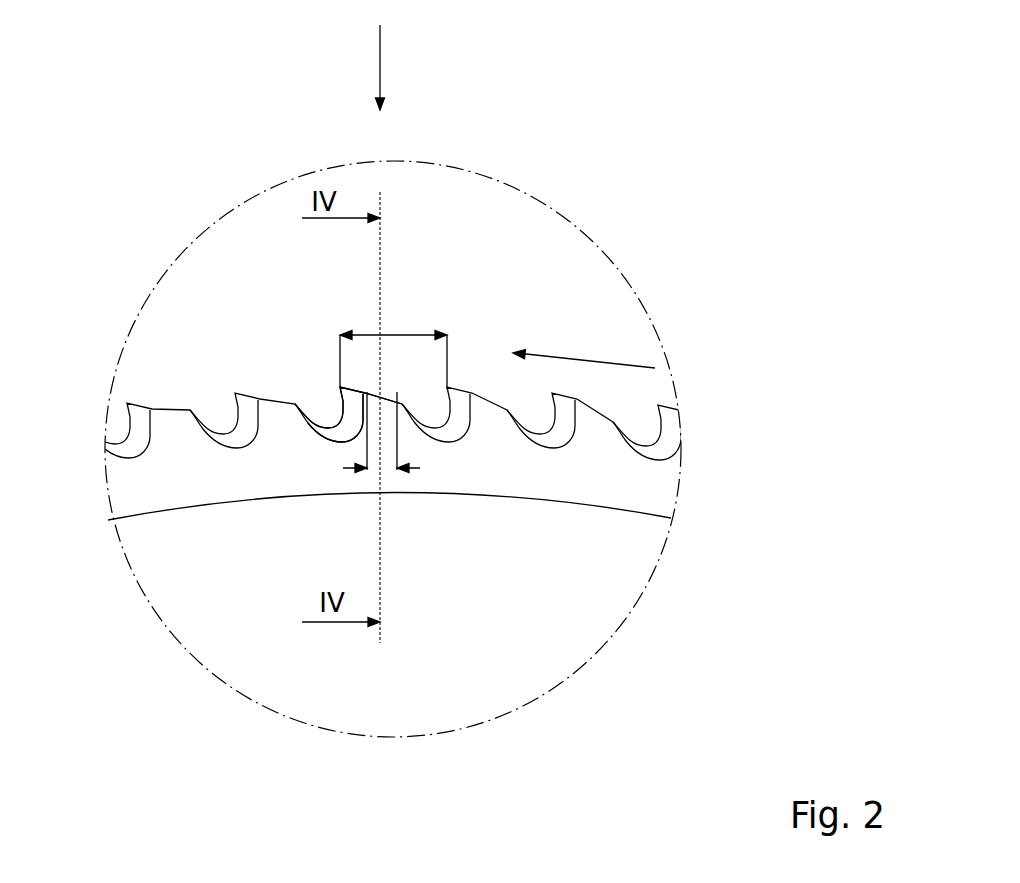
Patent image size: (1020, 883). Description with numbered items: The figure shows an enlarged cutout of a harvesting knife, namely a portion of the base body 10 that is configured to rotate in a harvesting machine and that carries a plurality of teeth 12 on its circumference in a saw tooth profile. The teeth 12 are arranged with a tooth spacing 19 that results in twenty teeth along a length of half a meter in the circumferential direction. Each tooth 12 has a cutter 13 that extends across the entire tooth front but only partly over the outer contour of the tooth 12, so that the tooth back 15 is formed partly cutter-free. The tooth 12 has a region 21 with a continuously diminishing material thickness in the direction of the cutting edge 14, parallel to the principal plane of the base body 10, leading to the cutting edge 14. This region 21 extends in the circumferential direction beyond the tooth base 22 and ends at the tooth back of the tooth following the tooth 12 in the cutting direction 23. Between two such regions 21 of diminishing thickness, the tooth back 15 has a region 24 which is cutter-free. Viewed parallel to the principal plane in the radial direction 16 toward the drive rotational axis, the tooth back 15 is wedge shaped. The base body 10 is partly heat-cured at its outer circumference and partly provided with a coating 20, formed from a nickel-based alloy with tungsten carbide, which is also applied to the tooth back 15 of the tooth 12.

The base body 10 is at (591, 659).
The tooth 12 is at (388, 380).
The cutter 13 is at (334, 438).
The cutting edge 14 is at (339, 406).
The tooth back 15 is at (373, 391).
The radial direction 16 is at (378, 65).
The tooth spacing 19 is at (393, 335).
The coating 20 is at (612, 487).
The region with continuously diminishing material thickness 21 is at (348, 398).
The tooth base 22 is at (338, 436).
The cutting direction 23 is at (592, 361).
The cutter-free region 24 is at (388, 476).